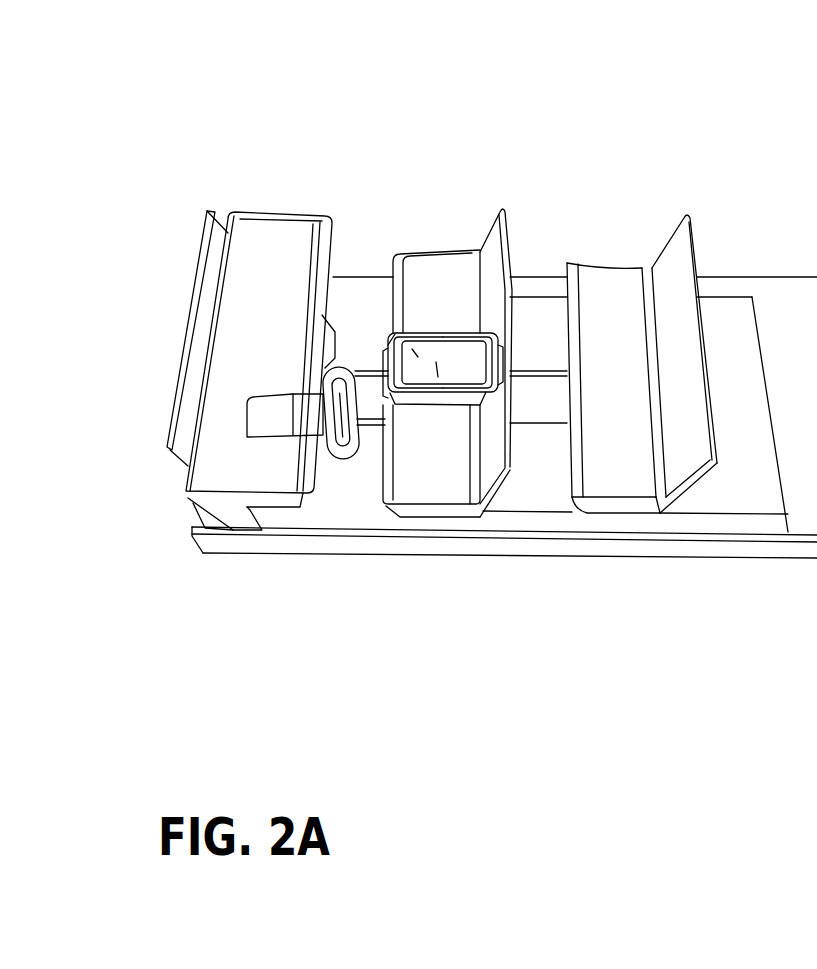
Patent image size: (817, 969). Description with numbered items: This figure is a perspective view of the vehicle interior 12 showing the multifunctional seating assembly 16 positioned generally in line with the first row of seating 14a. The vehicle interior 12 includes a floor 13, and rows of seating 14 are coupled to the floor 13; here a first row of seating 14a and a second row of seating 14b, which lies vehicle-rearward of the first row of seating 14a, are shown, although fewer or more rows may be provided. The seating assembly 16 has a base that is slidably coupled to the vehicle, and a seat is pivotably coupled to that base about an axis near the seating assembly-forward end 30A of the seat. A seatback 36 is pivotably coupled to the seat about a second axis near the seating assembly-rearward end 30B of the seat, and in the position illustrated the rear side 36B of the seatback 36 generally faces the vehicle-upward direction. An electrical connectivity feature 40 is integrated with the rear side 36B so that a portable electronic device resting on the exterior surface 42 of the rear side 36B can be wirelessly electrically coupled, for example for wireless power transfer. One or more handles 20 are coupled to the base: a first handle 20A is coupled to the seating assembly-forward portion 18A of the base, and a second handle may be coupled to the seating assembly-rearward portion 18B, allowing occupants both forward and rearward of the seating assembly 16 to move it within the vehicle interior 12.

The vehicle interior 12 is at (563, 172).
The floor 13 is at (531, 482).
The rows of seating 14 is at (442, 442).
The first row of seating 14a is at (430, 478).
The second row of seating 14b is at (637, 487).
The multifunctional seating assembly 16 is at (432, 330).
The seating assembly-forward portion of the base 18A is at (393, 405).
The seating assembly-rearward portion of the base 18B is at (500, 338).
The handles 20 is at (380, 380).
The first handle 20A is at (385, 382).
The seating assembly-forward end of the seat 30A is at (380, 355).
The seating assembly-rearward end of the seat 30B is at (503, 345).
The seatback 36 is at (467, 347).
The rear side of the seatback 36B is at (453, 348).
The electrical connectivity feature 40 is at (397, 410).
The exterior surface 42 is at (392, 333).